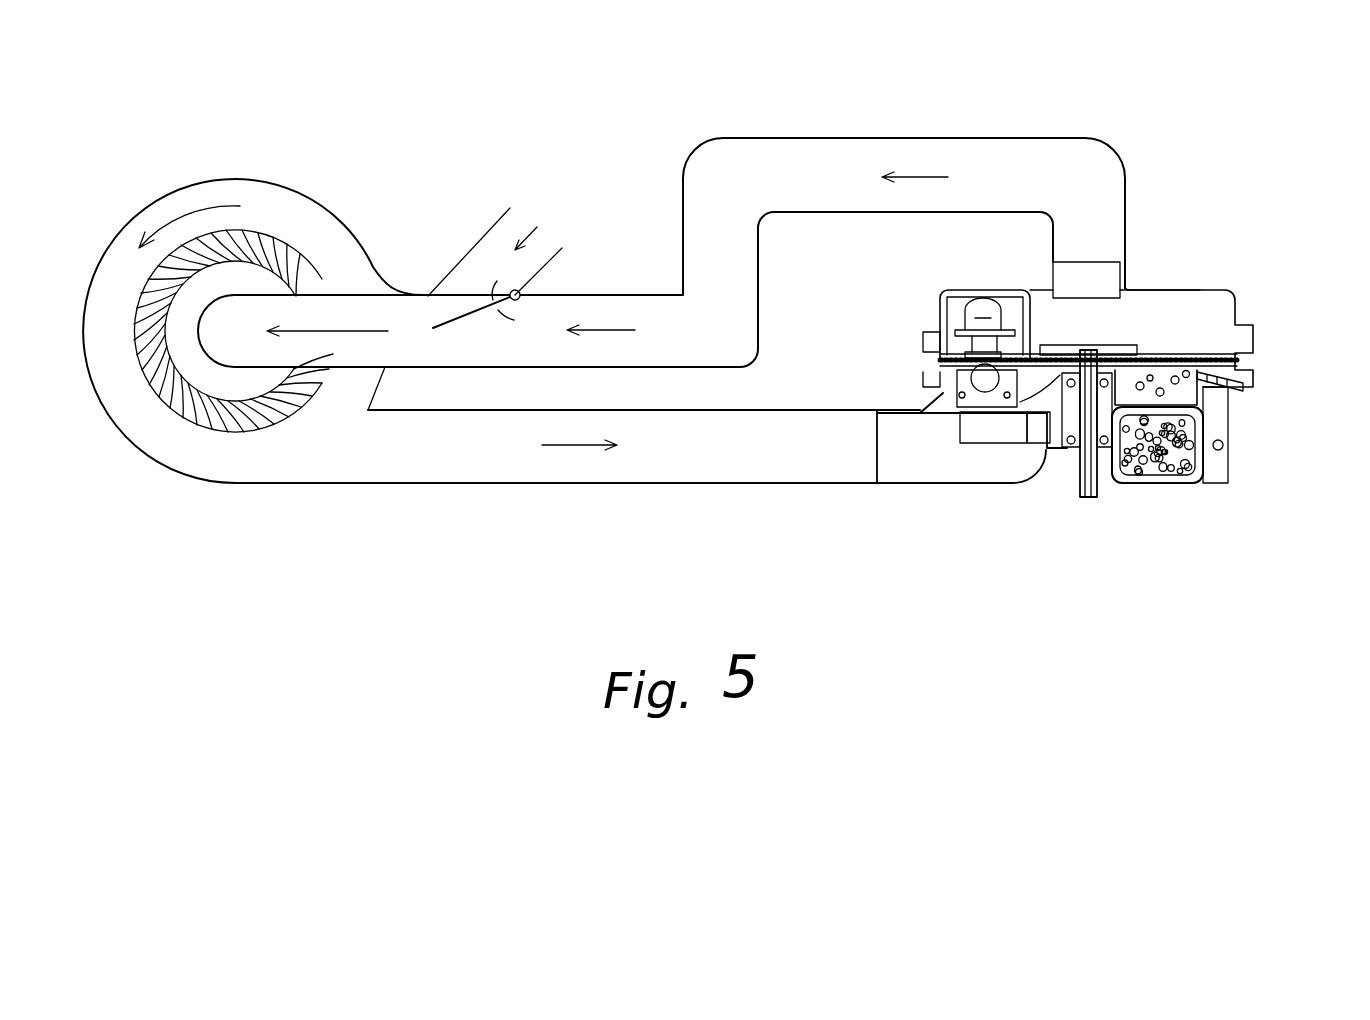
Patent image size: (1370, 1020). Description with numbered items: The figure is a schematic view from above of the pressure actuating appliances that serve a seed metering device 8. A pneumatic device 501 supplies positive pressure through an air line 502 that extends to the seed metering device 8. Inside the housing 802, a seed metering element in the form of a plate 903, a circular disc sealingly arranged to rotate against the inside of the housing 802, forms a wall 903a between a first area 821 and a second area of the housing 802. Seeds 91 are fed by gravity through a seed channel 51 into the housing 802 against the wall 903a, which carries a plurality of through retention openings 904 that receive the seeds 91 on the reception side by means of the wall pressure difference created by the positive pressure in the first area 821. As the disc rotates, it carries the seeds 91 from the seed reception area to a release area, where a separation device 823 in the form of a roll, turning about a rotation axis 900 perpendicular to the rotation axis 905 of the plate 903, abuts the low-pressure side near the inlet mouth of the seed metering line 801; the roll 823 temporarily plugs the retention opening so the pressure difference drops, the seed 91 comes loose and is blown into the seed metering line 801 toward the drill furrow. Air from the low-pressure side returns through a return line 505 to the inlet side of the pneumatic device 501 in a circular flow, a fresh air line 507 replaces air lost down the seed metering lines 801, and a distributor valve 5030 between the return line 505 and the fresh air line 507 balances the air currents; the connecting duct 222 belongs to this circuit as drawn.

The pneumatic device 501 is at (193, 443).
The air line 502 is at (508, 470).
The return line 505 is at (780, 167).
The fresh air line 507 is at (488, 252).
The distributor valve 5030 is at (463, 315).
The connecting duct 222 is at (1128, 315).
The plate 903 is at (1160, 322).
The wall 903a is at (1030, 290).
The housing 802 is at (1209, 326).
The rotation axis 900 is at (940, 317).
The separation device 823 is at (957, 313).
The retention openings 904 is at (1190, 360).
The seed metering line 801 is at (980, 393).
The rotation axis 905 is at (1082, 482).
The first area 821 is at (1180, 390).
The seeds 91 is at (1223, 398).
The seed channel 51 is at (1125, 485).
The seed metering device 8 is at (1151, 538).